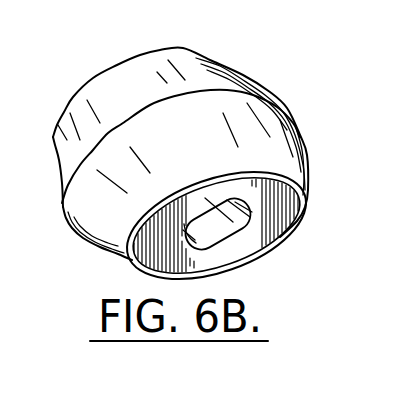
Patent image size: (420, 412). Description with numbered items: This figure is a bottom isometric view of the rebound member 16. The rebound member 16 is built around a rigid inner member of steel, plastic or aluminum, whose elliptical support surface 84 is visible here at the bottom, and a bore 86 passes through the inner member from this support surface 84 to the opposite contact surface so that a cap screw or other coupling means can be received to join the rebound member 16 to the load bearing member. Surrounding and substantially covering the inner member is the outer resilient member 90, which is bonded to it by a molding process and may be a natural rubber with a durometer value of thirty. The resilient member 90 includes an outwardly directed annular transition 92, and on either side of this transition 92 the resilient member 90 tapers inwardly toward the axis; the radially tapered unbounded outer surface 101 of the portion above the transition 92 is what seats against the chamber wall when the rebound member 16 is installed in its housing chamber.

The rebound member 16 is at (106, 52).
The outer resilient member 90 is at (193, 63).
The unbounded outer surface 101 is at (213, 75).
The annular transition 92 is at (73, 195).
The support surface 84 is at (293, 207).
The bore 86 is at (216, 231).